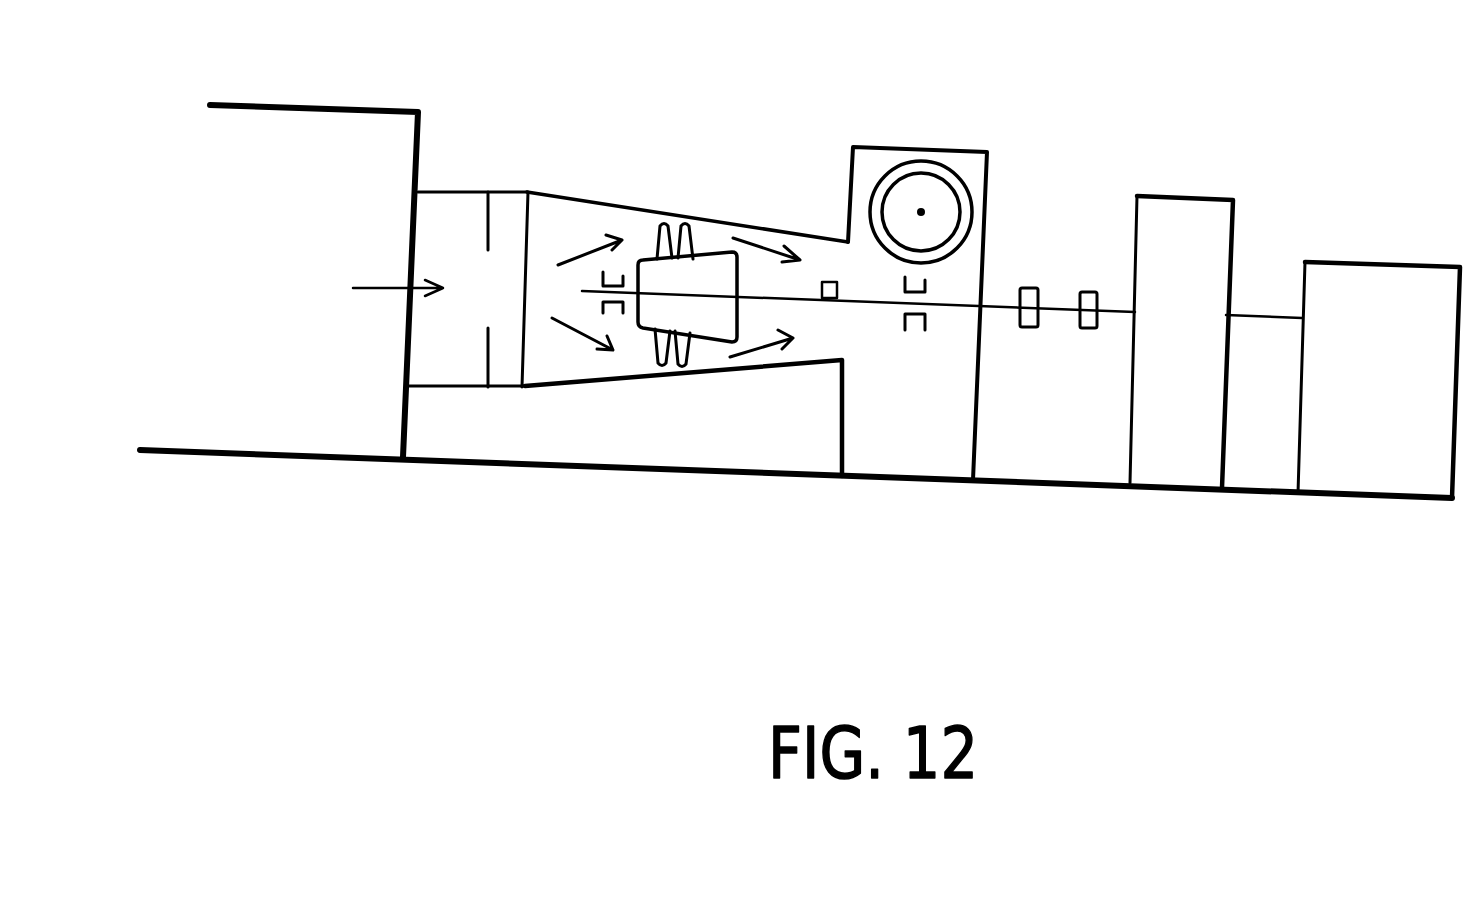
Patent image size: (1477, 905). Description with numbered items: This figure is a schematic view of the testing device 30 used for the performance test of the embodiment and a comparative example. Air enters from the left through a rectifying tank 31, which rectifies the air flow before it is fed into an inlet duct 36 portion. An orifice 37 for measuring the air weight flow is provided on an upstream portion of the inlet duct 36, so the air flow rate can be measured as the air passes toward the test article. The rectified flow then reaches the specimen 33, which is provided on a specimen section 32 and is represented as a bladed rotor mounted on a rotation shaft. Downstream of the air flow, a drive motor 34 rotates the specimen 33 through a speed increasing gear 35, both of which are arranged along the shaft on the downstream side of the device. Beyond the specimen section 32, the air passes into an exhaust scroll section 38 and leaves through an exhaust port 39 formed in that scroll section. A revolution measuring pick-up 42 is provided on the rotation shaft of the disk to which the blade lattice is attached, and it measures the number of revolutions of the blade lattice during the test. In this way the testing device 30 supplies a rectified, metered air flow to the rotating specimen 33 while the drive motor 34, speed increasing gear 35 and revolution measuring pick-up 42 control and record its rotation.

The testing device 30 is at (520, 535).
The rectifying tank 31 is at (347, 150).
The specimen section 32 is at (513, 502).
The specimen 33 is at (718, 272).
The drive motor 34 is at (1403, 288).
The speed increasing gear 35 is at (1192, 210).
The inlet duct 36 is at (475, 192).
The orifice 37 is at (488, 225).
The exhaust scroll section 38 is at (953, 448).
The exhaust port 39 is at (921, 212).
The revolution measuring pick-up 42 is at (828, 282).